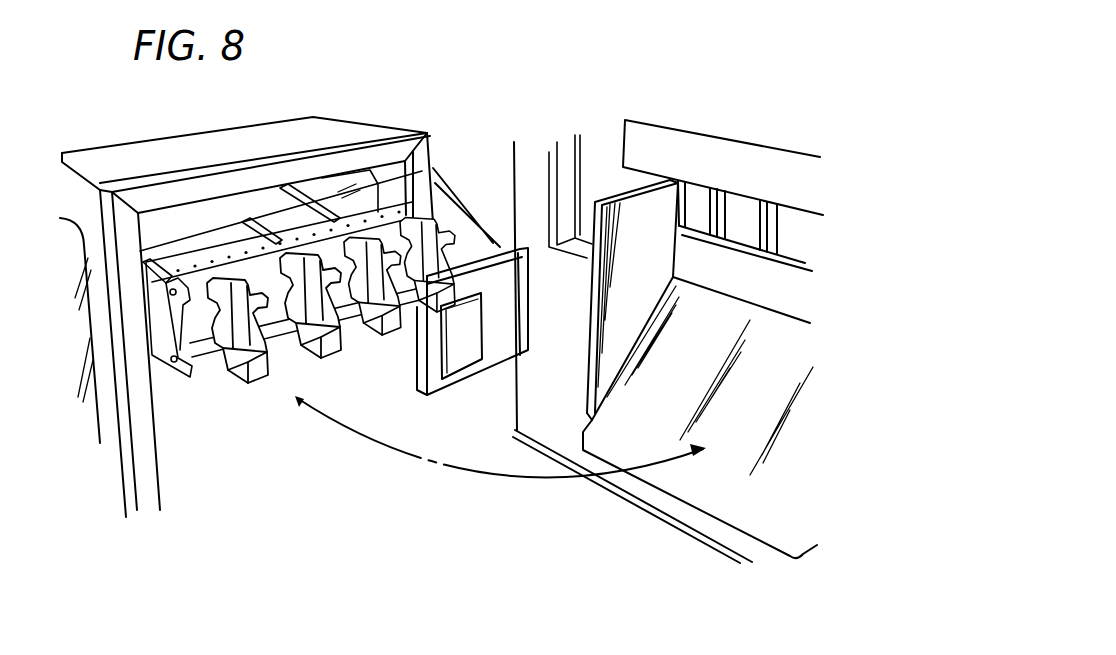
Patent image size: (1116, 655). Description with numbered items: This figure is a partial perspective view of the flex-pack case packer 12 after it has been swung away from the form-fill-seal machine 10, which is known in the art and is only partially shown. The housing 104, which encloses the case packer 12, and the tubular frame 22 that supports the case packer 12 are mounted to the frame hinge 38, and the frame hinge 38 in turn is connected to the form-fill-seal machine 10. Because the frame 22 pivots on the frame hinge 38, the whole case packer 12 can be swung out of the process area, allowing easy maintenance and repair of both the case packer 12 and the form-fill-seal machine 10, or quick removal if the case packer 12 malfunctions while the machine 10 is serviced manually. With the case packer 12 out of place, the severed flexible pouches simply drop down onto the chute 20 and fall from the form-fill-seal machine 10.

The form-fill-seal machine 10 is at (697, 152).
The flex-pack case packer 12 is at (264, 400).
The chute 20 is at (708, 493).
The tubular frame 22 is at (360, 135).
The frame hinge 38 is at (506, 242).
The housing 104 is at (188, 152).